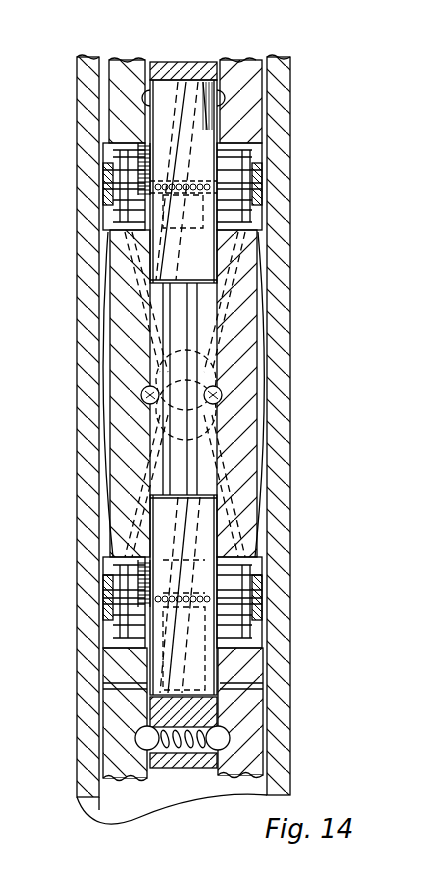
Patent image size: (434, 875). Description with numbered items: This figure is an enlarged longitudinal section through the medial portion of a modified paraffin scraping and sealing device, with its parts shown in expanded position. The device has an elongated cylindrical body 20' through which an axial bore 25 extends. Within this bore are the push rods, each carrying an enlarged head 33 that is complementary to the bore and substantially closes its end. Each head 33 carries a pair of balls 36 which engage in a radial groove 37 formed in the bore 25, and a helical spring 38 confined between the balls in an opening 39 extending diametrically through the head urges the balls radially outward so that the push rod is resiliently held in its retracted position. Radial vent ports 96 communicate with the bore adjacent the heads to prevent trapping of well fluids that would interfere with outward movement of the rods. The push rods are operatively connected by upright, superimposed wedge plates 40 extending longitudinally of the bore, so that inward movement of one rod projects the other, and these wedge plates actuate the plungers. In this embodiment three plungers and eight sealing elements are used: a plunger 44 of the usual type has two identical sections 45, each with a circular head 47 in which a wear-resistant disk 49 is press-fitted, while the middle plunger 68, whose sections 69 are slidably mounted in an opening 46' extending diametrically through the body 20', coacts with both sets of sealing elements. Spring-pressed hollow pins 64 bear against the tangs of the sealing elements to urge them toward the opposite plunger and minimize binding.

The body 20' is at (165, 439).
The head 33 is at (193, 61).
The groove 37 is at (222, 107).
The plunger 44 is at (104, 160).
The head 47 is at (265, 152).
The disk 49 is at (263, 184).
The section 69 is at (167, 370).
The middle plunger 68 is at (227, 400).
The opening 46' is at (150, 394).
The wedge plate 40 is at (217, 513).
The bore 25 is at (213, 670).
The pin 64 is at (100, 570).
The section 45 is at (263, 572).
The vent port 96 is at (104, 690).
The ball 36 is at (136, 740).
The helical spring 38 is at (170, 752).
The opening 39 is at (192, 752).